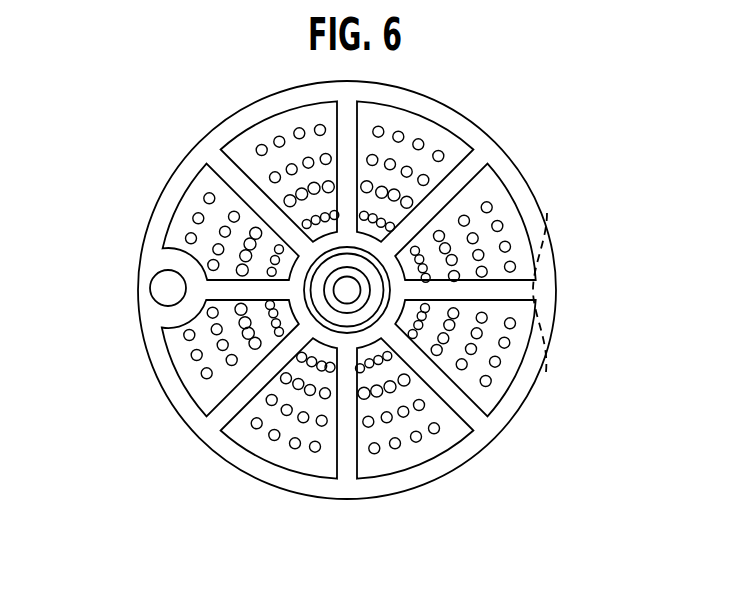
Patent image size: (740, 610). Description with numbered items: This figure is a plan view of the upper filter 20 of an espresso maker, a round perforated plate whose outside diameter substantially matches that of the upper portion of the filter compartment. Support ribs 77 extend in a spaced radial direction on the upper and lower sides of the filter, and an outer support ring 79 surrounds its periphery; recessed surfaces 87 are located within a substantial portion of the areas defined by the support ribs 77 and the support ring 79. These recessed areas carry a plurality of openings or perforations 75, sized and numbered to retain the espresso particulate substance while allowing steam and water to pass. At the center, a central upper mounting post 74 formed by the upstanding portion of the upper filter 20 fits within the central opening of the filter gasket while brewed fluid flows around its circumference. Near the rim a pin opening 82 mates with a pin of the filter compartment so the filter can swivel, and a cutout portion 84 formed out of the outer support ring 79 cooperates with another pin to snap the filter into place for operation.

The upper filter 20 is at (578, 266).
The central upper mounting post 74 is at (395, 306).
The openings or perforations 75 is at (466, 218).
The support ribs 77 is at (232, 405).
The outer support ring 79 is at (157, 383).
The pin opening 82 is at (150, 288).
The cutout portion 84 is at (558, 301).
The recessed surface 87 is at (440, 137).